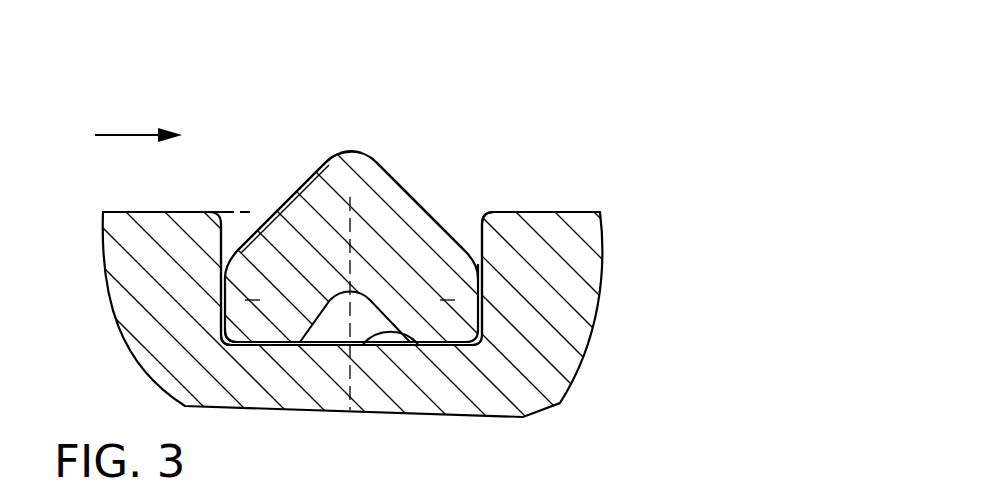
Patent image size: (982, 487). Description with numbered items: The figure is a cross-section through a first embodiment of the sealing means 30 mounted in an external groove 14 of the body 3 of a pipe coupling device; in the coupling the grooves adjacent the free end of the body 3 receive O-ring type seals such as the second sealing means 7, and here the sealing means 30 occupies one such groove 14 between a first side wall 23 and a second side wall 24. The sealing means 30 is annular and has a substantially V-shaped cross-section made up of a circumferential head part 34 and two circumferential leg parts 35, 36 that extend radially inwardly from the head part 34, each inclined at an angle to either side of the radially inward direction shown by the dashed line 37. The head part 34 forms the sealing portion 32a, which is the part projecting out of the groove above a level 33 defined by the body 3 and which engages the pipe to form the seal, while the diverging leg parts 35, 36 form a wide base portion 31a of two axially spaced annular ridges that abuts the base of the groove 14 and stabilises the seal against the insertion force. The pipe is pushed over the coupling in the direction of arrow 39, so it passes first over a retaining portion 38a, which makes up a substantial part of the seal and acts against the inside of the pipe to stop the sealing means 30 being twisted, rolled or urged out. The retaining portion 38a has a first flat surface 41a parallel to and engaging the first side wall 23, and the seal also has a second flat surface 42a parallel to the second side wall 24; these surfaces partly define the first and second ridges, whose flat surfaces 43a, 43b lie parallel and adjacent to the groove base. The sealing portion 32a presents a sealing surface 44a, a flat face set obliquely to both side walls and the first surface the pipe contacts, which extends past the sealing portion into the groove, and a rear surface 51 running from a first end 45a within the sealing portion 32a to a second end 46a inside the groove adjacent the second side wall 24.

The body 3 is at (588, 272).
The second sealing means 7 is at (507, 212).
The groove 14 is at (406, 345).
The first side wall 23 is at (220, 253).
The second side wall 24 is at (484, 318).
The sealing means 30 is at (430, 238).
The base portion 31a is at (223, 338).
The sealing portion 32a is at (318, 185).
The level 33 is at (225, 212).
The head part 34 is at (392, 180).
The first leg part 35 is at (270, 288).
The second leg part 36 is at (428, 312).
The radially inward direction 37 is at (354, 317).
The retaining portion 38a is at (262, 207).
The arrow 39 is at (138, 126).
The first flat surface 41a is at (280, 336).
The second flat surface 42a is at (484, 264).
The flat surface 43a is at (240, 337).
The flat surface 43b is at (436, 346).
The sealing surface 44a is at (328, 158).
The first end 45a is at (350, 152).
The second end 46a is at (478, 260).
The rear surface 51 is at (410, 187).